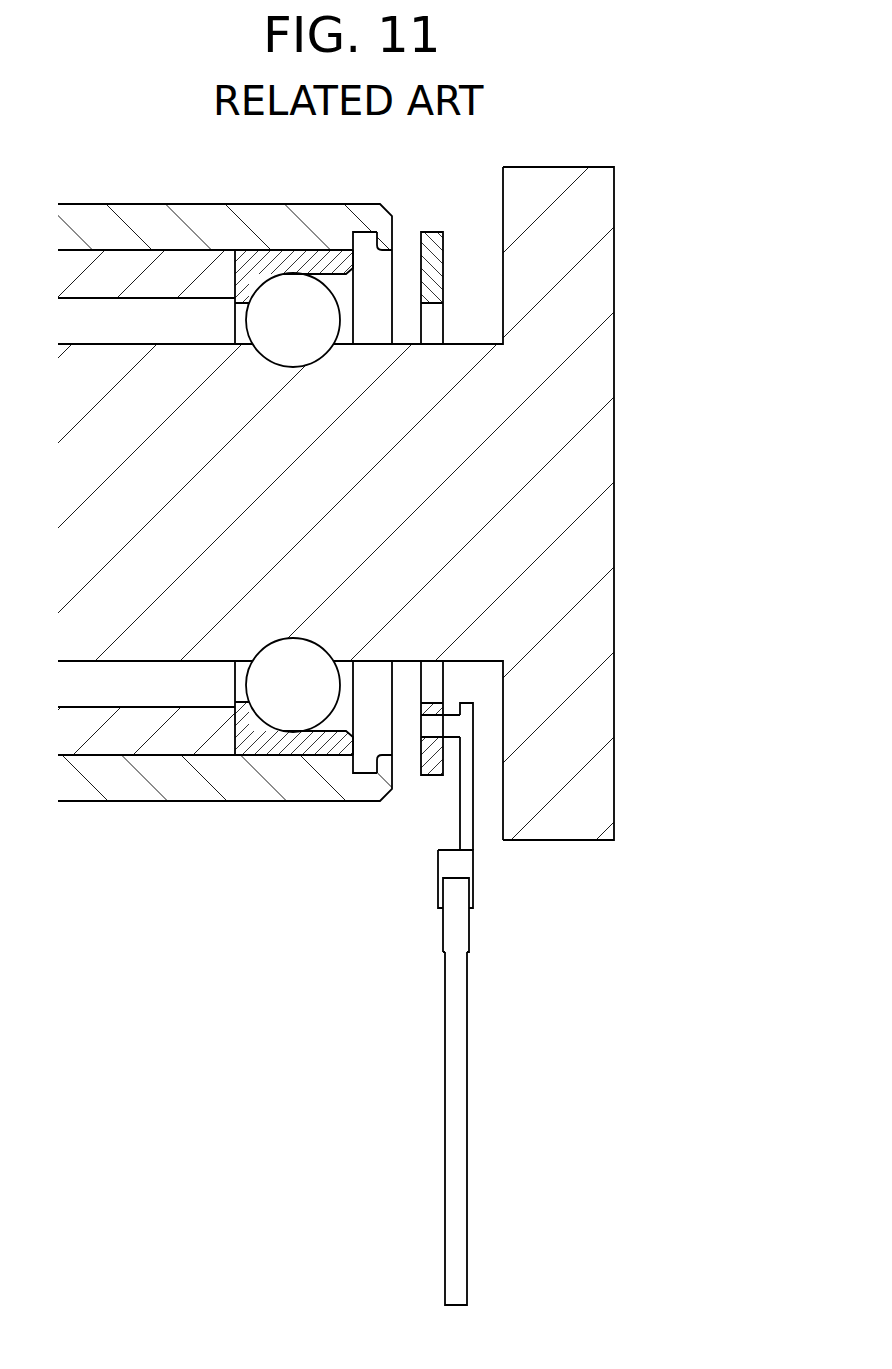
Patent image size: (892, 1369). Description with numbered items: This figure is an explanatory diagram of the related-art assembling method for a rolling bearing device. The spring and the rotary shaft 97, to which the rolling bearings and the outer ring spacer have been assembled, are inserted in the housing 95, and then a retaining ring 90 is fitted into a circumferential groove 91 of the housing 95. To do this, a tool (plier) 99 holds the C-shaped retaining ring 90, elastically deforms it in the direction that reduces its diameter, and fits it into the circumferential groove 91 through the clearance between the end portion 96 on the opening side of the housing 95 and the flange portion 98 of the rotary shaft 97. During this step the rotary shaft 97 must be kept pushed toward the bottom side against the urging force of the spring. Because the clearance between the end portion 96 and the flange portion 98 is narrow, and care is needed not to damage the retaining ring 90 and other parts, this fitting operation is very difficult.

The retaining ring 90 is at (430, 775).
The circumferential groove 91 is at (337, 747).
The housing 95 is at (182, 802).
The end portion 96 is at (387, 798).
The rotary shaft 97 is at (480, 462).
The flange portion 98 is at (590, 773).
The tool (plier) 99 is at (467, 1098).